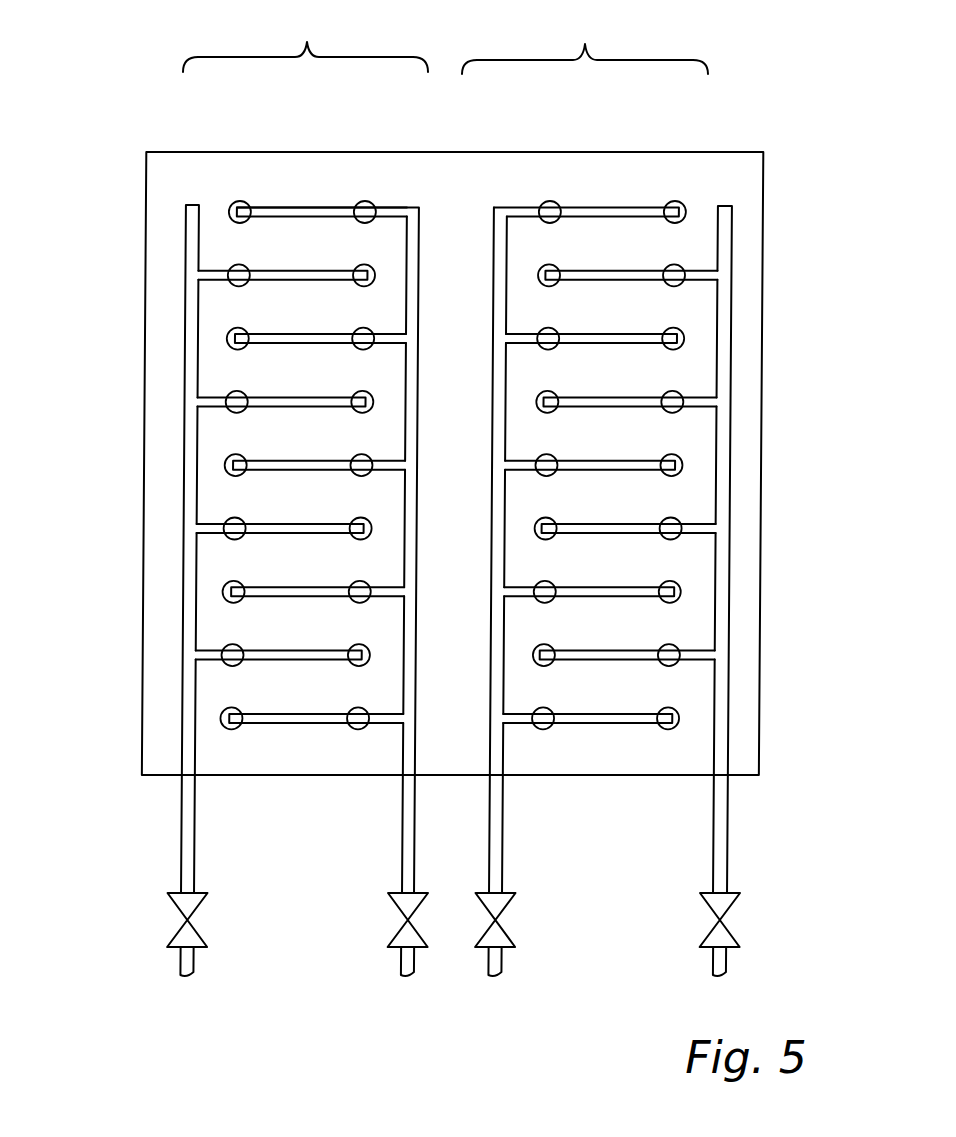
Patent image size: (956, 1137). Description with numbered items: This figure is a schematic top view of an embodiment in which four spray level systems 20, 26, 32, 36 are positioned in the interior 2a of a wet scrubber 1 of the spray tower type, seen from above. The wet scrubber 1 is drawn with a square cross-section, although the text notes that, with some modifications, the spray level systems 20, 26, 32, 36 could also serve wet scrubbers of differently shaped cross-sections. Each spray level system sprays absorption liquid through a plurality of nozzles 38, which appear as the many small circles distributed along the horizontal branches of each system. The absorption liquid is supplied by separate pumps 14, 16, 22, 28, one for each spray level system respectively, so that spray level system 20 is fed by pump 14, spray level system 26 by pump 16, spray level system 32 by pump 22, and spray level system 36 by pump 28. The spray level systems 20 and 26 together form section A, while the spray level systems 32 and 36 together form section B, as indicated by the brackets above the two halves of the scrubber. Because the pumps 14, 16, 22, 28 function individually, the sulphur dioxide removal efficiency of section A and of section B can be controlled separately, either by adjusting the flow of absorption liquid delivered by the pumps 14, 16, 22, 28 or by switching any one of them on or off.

The wet scrubber 1 is at (118, 432).
The interior 2a is at (718, 183).
The pump 14 is at (187, 921).
The pump 16 is at (410, 921).
The spray level system 20 is at (190, 215).
The pump 22 is at (498, 921).
The spray level system 26 is at (413, 204).
The pump 28 is at (722, 922).
The spray level system 32 is at (527, 205).
The spray level system 36 is at (735, 301).
The nozzles 38 is at (238, 204).
The section A is at (290, 488).
The section B is at (653, 488).